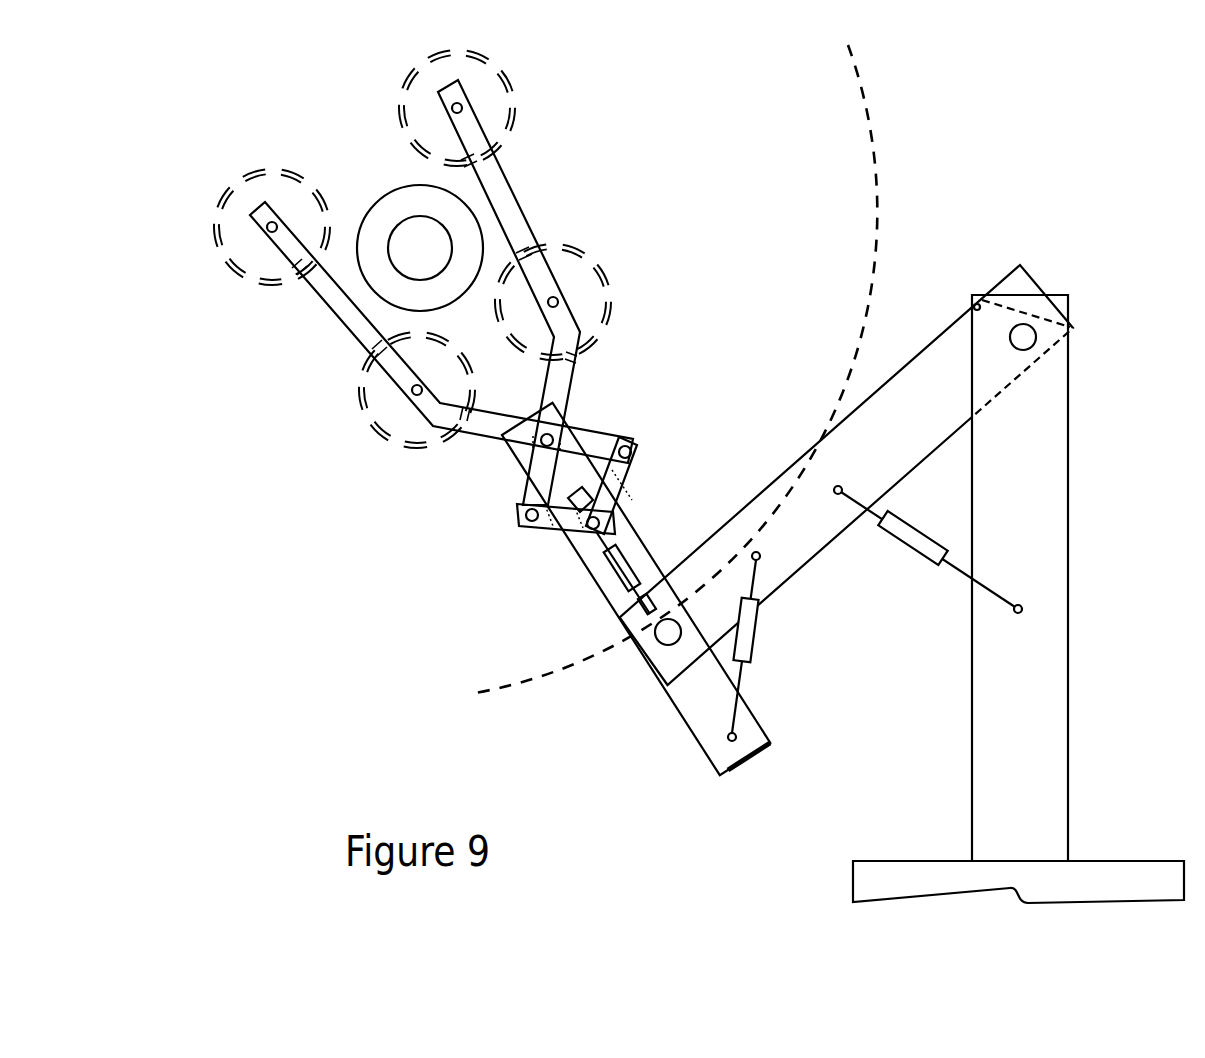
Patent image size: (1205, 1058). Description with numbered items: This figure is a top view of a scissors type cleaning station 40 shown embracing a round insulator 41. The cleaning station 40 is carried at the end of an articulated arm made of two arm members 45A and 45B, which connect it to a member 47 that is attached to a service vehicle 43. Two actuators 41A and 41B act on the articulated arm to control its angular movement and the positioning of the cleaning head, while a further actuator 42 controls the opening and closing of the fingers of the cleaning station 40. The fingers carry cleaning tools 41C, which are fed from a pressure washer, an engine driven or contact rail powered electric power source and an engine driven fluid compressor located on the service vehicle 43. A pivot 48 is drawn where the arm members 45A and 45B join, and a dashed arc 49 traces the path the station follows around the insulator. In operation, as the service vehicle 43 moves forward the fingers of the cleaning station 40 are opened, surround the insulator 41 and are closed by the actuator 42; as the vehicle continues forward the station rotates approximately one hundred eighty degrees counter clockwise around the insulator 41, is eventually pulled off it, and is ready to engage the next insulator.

The scissors type cleaning station 40 is at (412, 352).
The insulator 41 is at (378, 200).
The actuator 41A is at (751, 640).
The actuator 41B is at (922, 561).
The cleaning tools 41C is at (355, 380).
The actuator 42 is at (627, 552).
The service vehicle 43 is at (853, 882).
The articulated arm member 45A is at (683, 707).
The articulated arm member 45B is at (903, 368).
The member 47 is at (1070, 492).
The pivot 48 is at (668, 632).
The arc of travel 49 is at (877, 155).